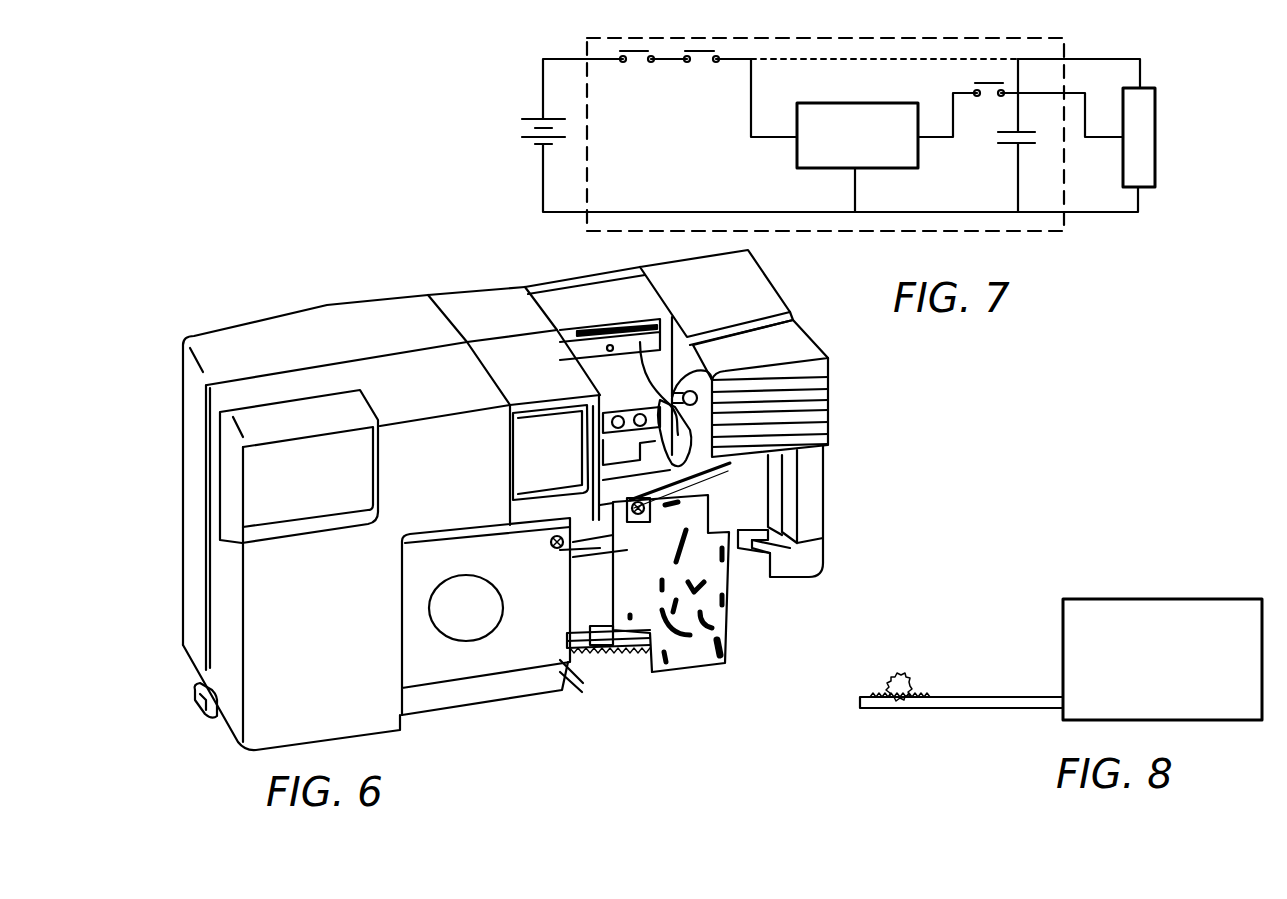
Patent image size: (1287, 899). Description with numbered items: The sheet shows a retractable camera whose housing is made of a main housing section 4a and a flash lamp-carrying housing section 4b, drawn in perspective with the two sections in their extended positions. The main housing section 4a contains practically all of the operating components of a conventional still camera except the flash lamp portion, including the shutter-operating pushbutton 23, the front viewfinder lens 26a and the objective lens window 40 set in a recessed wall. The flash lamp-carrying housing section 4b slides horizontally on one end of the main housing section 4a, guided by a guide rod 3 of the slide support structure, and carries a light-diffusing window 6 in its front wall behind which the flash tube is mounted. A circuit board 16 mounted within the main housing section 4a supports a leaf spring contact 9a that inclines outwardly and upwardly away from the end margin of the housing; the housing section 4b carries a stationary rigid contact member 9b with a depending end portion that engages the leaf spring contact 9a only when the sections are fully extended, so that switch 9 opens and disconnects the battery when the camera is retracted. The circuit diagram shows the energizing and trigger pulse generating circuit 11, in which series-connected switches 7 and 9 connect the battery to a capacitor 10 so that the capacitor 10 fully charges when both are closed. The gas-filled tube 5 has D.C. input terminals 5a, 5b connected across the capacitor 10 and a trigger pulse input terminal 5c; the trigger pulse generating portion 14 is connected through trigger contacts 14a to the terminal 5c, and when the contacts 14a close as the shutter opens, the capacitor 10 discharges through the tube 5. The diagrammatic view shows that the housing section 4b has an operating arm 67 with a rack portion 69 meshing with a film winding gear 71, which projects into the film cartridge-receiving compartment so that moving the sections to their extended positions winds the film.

In FIG. 7, the energizing and trigger pulse generating circuit 11 is at (612, 40).
In FIG. 7, the switch 9 is at (635, 53).
In FIG. 7, the switch 7 is at (703, 53).
In FIG. 7, the trigger pulse generating portion 14 is at (797, 160).
In FIG. 7, the trigger contacts 14a is at (1000, 82).
In FIG. 7, the capacitor 10 is at (1000, 146).
In FIG. 7, the gas-filled tube 5 is at (1157, 103).
In FIG. 7, the D.C. input terminal 5a is at (1127, 90).
In FIG. 7, the D.C. input terminal 5b is at (1140, 190).
In FIG. 7, the trigger pulse input terminal 5c is at (1119, 138).
In FIG. 6, the shutter-operating pushbutton 23 is at (265, 462).
In FIG. 6, the front viewfinder lens 26a is at (538, 448).
In FIG. 6, the stationary rigid contact member 9b is at (664, 470).
In FIG. 6, the leaf spring contact 9a is at (724, 466).
In FIG. 6, the light-diffusing window 6 is at (800, 388).
In FIG. 6, the flash lamp-carrying housing section 4b is at (837, 525).
In FIG. 8, the flash lamp-carrying housing section 4b is at (1263, 622).
In FIG. 6, the circuit board 16 is at (728, 628).
In FIG. 6, the guide rod 3 is at (624, 657).
In FIG. 6, the objective lens window 40 is at (450, 612).
In FIG. 6, the main housing section 4a is at (183, 646).
In FIG. 8, the film winding gear 71 is at (903, 675).
In FIG. 8, the operating arm 67 is at (980, 700).
In FIG. 8, the rack portion 69 is at (925, 698).